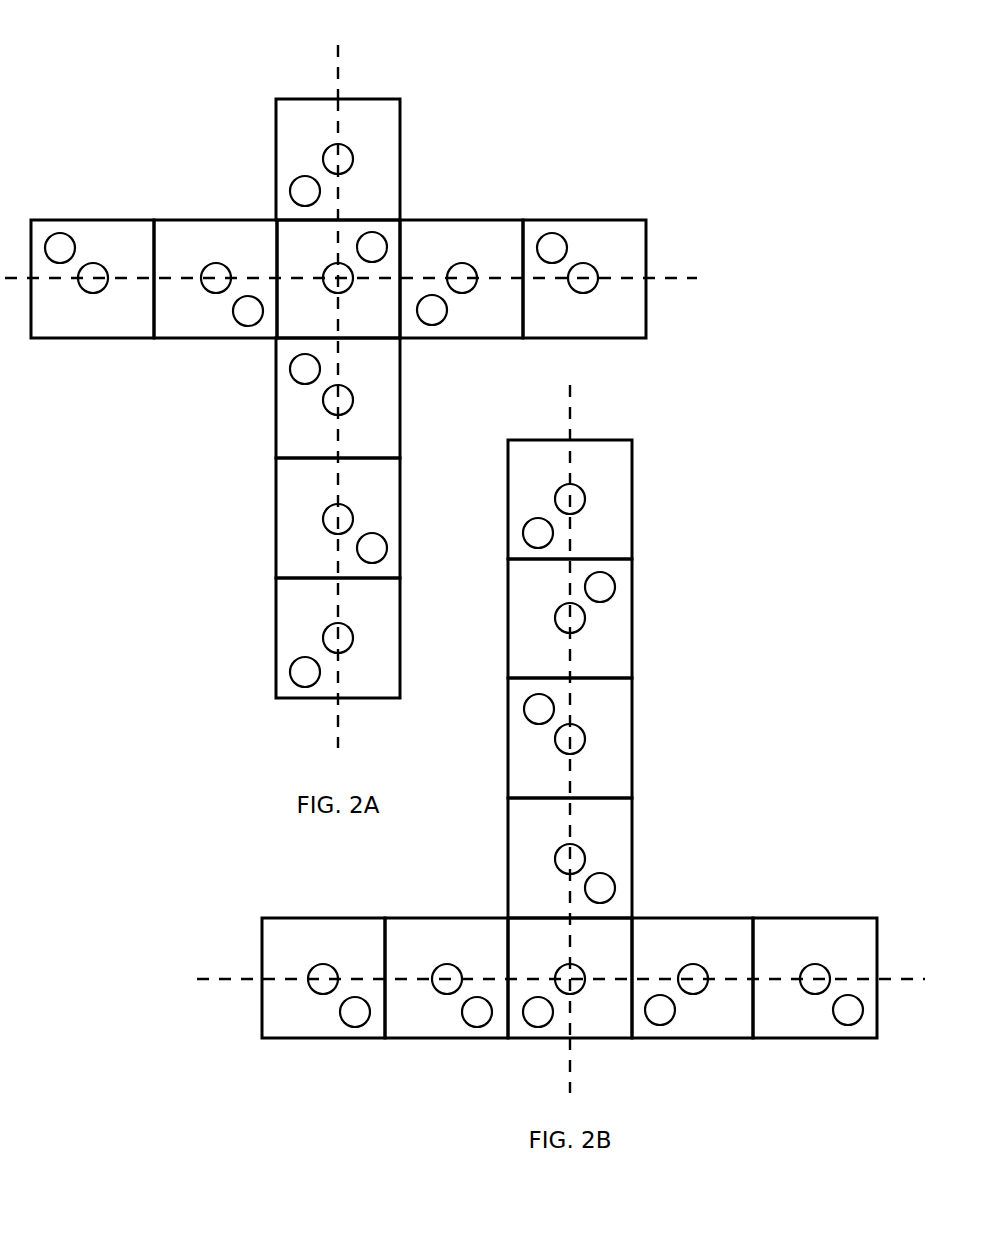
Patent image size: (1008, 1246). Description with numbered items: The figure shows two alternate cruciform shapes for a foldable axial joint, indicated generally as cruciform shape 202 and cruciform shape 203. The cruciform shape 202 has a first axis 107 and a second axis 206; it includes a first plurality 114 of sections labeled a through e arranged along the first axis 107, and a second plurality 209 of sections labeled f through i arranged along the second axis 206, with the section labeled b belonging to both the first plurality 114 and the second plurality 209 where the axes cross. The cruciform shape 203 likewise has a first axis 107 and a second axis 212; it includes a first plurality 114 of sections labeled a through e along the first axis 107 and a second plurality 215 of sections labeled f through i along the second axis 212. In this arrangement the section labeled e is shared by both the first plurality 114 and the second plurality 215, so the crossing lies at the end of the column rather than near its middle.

In FIG. 2A, the first axis 107 is at (338, 65).
In FIG. 2B, the first axis 107 is at (570, 422).
In FIG. 2A, the first plurality of sections 114 is at (300, 74).
In FIG. 2B, the first plurality of sections 114 is at (595, 1053).
In FIG. 2A, the cruciform shape 202 is at (190, 597).
In FIG. 2B, the cruciform shape 203 is at (713, 626).
In FIG. 2A, the second axis 206 is at (673, 278).
In FIG. 2A, the second plurality of sections 209 is at (670, 308).
In FIG. 2B, the second axis 212 is at (230, 979).
In FIG. 2B, the second plurality of sections 215 is at (245, 1008).